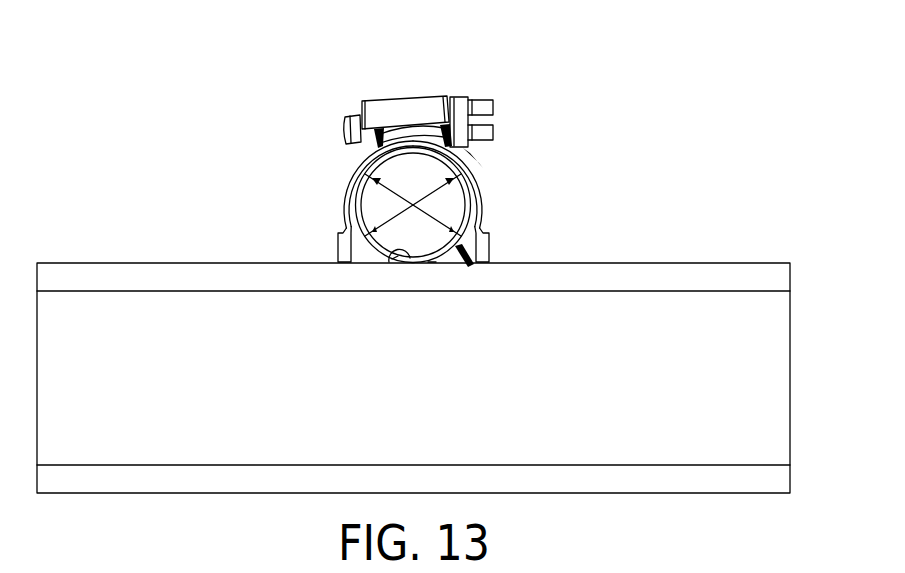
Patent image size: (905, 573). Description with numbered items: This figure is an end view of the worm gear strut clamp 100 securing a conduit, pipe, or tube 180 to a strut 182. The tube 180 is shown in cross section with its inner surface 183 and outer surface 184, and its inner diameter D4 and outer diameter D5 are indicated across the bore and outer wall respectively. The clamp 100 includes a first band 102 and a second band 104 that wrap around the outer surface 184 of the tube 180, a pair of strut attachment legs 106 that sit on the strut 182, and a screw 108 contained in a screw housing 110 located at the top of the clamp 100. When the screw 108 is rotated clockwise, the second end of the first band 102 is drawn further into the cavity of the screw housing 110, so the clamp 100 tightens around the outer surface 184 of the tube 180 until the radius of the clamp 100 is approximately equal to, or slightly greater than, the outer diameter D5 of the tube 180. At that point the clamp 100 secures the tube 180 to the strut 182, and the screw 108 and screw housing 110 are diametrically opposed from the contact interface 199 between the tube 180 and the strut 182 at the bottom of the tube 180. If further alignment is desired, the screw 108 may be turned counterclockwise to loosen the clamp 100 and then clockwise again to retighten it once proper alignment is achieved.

The clamp 100 is at (361, 60).
The first band 102 is at (344, 217).
The second band 104 is at (482, 223).
The strut attachment legs 106 is at (337, 250).
The screw 108 is at (343, 130).
The screw housing 110 is at (440, 97).
The tube 180 is at (467, 259).
The strut 182 is at (766, 222).
The inner surface 183 is at (392, 259).
The outer surface 184 is at (369, 248).
The contact interface 199 is at (432, 262).
The inner diameter D4 is at (436, 198).
The outer diameter D5 is at (392, 198).